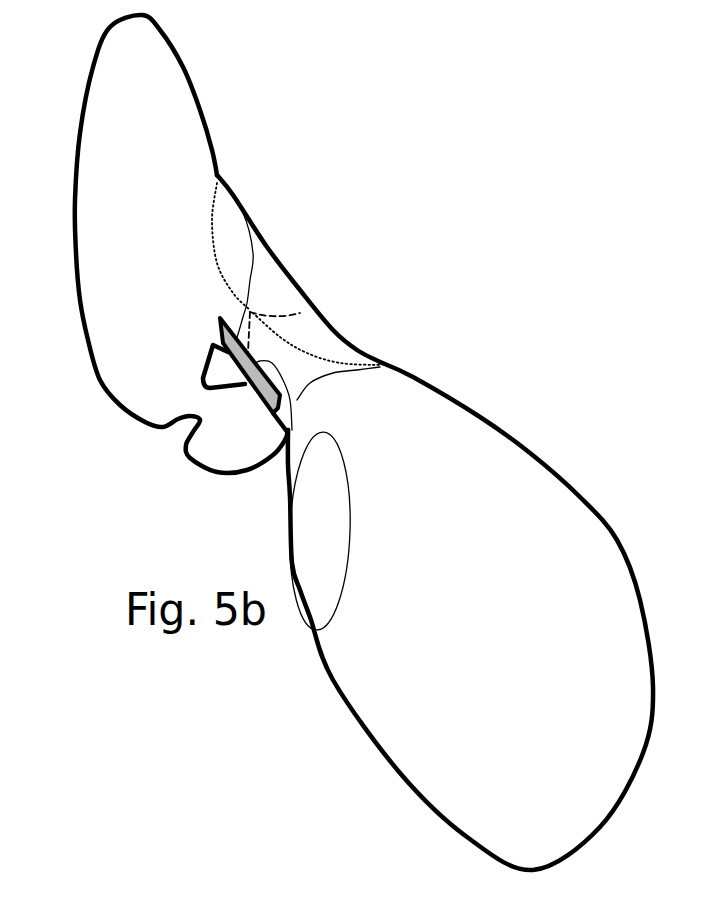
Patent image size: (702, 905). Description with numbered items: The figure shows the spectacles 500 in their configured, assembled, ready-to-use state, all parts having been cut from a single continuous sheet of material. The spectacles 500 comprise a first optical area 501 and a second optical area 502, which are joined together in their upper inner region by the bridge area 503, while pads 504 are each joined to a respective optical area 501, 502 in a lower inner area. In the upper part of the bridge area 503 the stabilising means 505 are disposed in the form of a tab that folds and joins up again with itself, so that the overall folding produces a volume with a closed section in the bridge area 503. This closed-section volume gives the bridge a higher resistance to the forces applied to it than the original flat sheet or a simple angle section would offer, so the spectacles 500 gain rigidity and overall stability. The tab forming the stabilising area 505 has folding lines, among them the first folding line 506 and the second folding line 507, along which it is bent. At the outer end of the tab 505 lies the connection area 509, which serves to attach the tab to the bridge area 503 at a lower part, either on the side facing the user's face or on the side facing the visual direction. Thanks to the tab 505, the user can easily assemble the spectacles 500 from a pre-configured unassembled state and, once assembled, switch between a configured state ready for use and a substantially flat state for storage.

The spectacles 500 is at (150, 496).
The first optical area 501 is at (513, 463).
The second optical area 502 is at (125, 318).
The bridge area 503 is at (260, 337).
The pads 504 is at (232, 450).
The stabilising means 505 is at (265, 260).
The first folding line 506 is at (307, 352).
The second folding line 507 is at (297, 283).
The connection area 509 is at (240, 377).